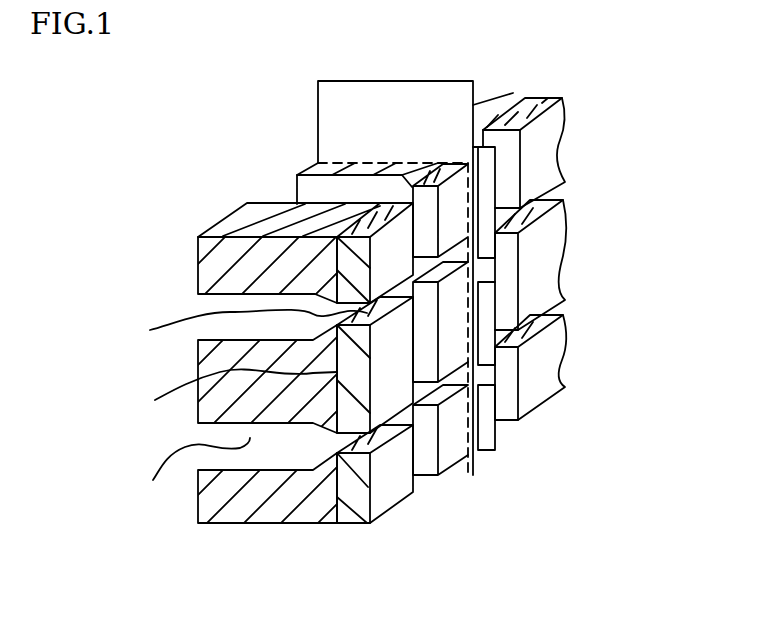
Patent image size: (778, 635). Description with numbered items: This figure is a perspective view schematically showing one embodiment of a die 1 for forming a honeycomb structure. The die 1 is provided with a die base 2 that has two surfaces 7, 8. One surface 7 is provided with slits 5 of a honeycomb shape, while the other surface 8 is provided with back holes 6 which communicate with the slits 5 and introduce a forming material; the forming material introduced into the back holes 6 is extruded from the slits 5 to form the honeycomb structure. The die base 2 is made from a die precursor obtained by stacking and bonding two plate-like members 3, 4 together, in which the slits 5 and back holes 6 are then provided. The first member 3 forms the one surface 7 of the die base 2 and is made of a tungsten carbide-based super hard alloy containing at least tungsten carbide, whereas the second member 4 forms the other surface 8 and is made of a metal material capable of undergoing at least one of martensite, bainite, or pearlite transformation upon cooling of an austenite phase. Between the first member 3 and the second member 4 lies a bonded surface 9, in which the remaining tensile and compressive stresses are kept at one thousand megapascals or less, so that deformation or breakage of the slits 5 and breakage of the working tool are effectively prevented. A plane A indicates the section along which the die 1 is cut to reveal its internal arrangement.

The die for forming a honeycomb structure 1 is at (658, 216).
The die base 2 is at (302, 510).
The first member 3 is at (375, 500).
The second member 4 is at (283, 500).
The slits 5 is at (247, 327).
The back holes 6 is at (190, 469).
The one surface 7 is at (582, 154).
The other surface 8 is at (189, 260).
The bonded surface 9 is at (235, 392).
The plane A is at (382, 110).